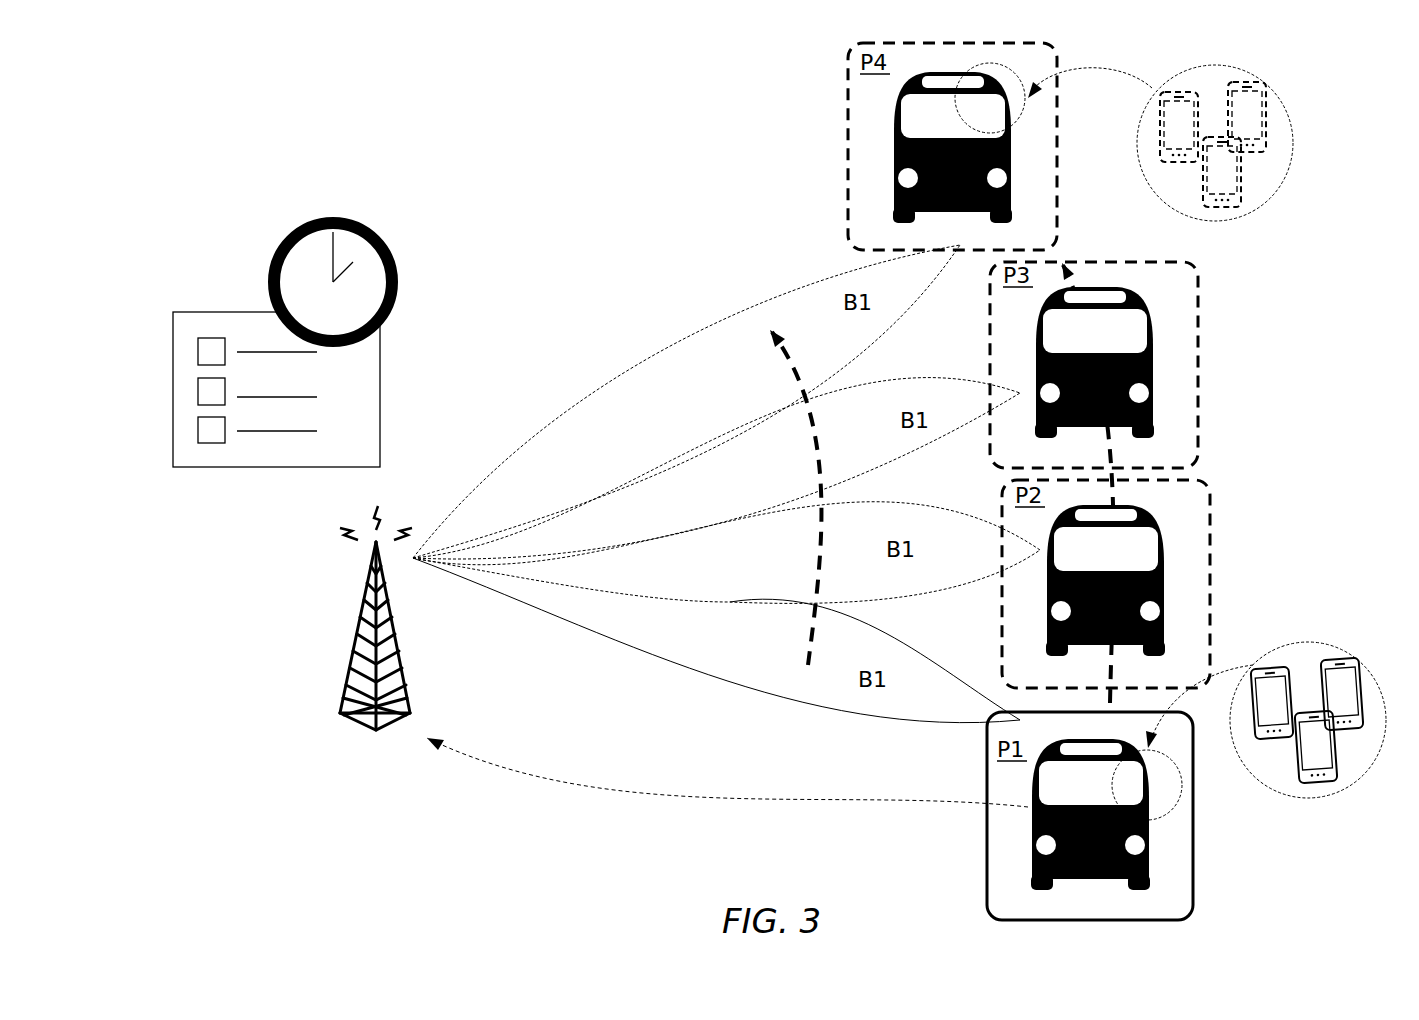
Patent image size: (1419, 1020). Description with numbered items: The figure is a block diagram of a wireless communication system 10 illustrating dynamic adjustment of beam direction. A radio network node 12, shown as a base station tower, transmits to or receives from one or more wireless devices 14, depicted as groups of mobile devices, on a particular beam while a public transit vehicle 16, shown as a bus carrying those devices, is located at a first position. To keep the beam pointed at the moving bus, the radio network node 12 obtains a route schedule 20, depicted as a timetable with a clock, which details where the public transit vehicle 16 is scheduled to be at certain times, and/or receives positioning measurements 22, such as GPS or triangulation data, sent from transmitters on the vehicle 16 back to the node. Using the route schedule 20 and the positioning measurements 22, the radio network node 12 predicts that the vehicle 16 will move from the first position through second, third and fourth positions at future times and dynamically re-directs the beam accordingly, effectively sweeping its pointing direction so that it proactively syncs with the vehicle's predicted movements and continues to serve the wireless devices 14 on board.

The wireless communication system 10 is at (508, 180).
The radio network node 12 is at (340, 713).
The wireless devices 14 is at (1283, 185).
The public transit vehicle 16 is at (1017, 173).
The route schedule 20 is at (221, 311).
The positioning measurements 22 is at (493, 770).